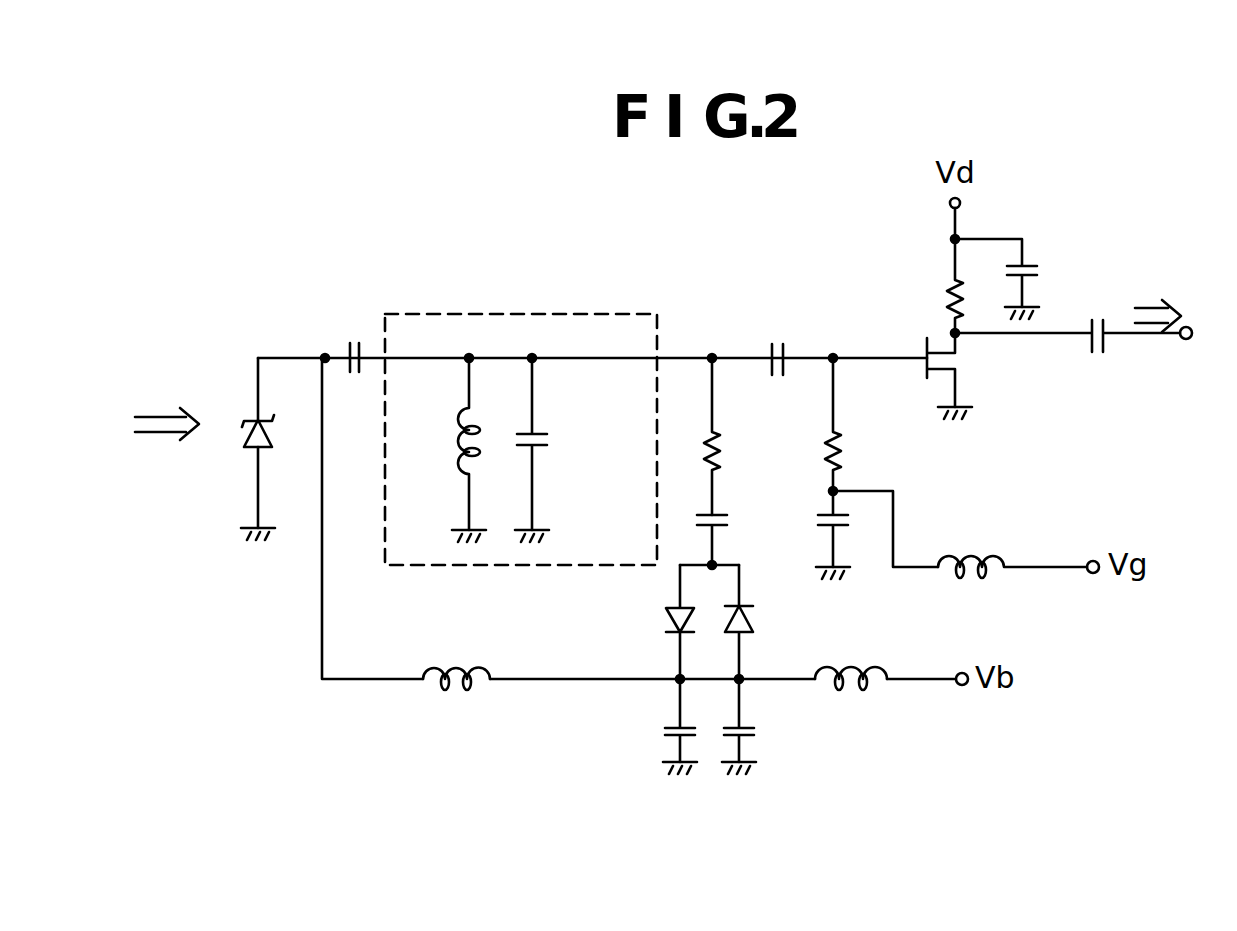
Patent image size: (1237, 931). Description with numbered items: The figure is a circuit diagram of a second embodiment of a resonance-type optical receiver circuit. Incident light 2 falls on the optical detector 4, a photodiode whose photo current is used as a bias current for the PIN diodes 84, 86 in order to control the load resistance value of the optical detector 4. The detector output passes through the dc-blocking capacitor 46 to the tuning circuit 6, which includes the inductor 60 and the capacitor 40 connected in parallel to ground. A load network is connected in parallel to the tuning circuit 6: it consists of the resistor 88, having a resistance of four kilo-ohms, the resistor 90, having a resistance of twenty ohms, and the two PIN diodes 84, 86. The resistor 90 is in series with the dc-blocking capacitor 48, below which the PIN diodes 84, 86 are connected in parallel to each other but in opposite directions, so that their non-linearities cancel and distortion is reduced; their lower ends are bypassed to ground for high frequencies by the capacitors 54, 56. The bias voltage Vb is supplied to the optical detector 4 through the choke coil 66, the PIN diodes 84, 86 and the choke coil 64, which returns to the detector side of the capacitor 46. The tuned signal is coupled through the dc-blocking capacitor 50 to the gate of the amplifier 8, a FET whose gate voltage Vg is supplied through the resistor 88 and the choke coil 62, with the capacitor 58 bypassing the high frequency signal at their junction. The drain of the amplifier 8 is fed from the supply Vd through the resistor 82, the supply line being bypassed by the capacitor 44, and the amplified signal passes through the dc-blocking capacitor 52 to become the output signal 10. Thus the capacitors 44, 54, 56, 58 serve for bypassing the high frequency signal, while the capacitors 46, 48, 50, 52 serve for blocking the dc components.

The incident light 2 is at (155, 410).
The optical detector 4 is at (242, 430).
The capacitor 46 is at (356, 338).
The tuning circuit 6 is at (472, 312).
The inductor 60 is at (452, 430).
The capacitor 40 is at (548, 438).
The capacitor 50 is at (774, 339).
The resistor 90 is at (720, 441).
The capacitor 48 is at (727, 524).
The resistor 88 is at (820, 462).
The capacitor 58 is at (818, 526).
The amplifier 8 is at (923, 344).
The resistor 82 is at (940, 294).
The capacitor 44 is at (1037, 268).
The capacitor 52 is at (1097, 354).
The output signal 10 is at (1145, 302).
The choke coil 62 is at (973, 580).
The PIN diode 84 is at (672, 618).
The PIN diode 86 is at (755, 626).
The capacitor 54 is at (638, 728).
The capacitor 56 is at (756, 736).
The choke coil 64 is at (458, 690).
The choke coil 66 is at (850, 686).